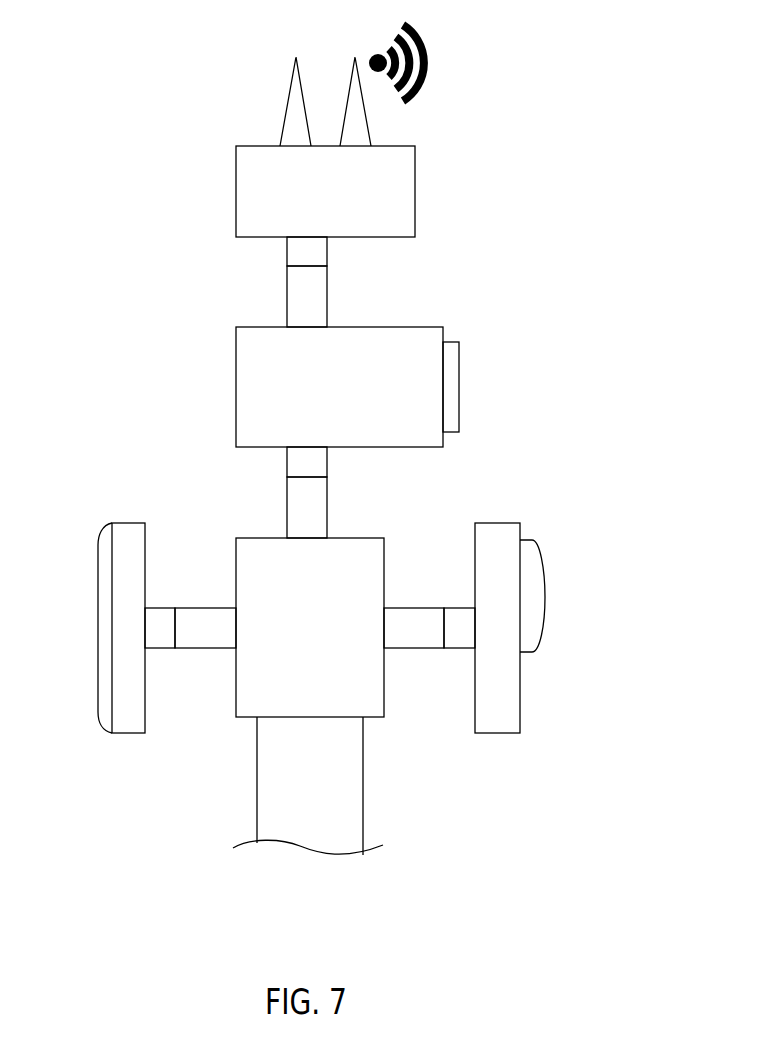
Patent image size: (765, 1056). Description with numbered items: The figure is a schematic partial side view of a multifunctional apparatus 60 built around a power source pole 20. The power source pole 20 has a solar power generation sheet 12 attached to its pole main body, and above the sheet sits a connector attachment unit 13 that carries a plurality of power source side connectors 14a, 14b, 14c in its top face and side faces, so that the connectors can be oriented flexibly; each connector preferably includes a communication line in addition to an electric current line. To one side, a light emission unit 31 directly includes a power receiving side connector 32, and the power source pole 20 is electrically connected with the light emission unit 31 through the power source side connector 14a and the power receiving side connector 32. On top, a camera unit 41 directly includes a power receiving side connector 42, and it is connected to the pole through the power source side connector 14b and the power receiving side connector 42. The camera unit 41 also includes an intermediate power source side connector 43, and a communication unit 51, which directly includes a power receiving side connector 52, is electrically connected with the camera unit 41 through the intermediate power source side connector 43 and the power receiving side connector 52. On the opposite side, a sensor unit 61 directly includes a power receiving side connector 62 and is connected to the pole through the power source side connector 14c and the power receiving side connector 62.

The multifunctional apparatus 60 is at (140, 372).
The communication unit 51 is at (397, 193).
The power receiving side connector 52 is at (312, 250).
The intermediate power source side connector 43 is at (312, 300).
The camera unit 41 is at (412, 343).
The power receiving side connector 42 is at (312, 464).
The power source side connector 14b is at (312, 510).
The power source pole 20 is at (242, 538).
The connector attachment unit 13 is at (370, 566).
The power receiving side connector 62 is at (158, 633).
The power source side connector 14c is at (203, 633).
The power source side connector 14a is at (410, 633).
The power receiving side connector 32 is at (457, 633).
The solar power generation sheet 12 is at (347, 790).
The sensor unit 61 is at (128, 533).
The light emission unit 31 is at (497, 533).